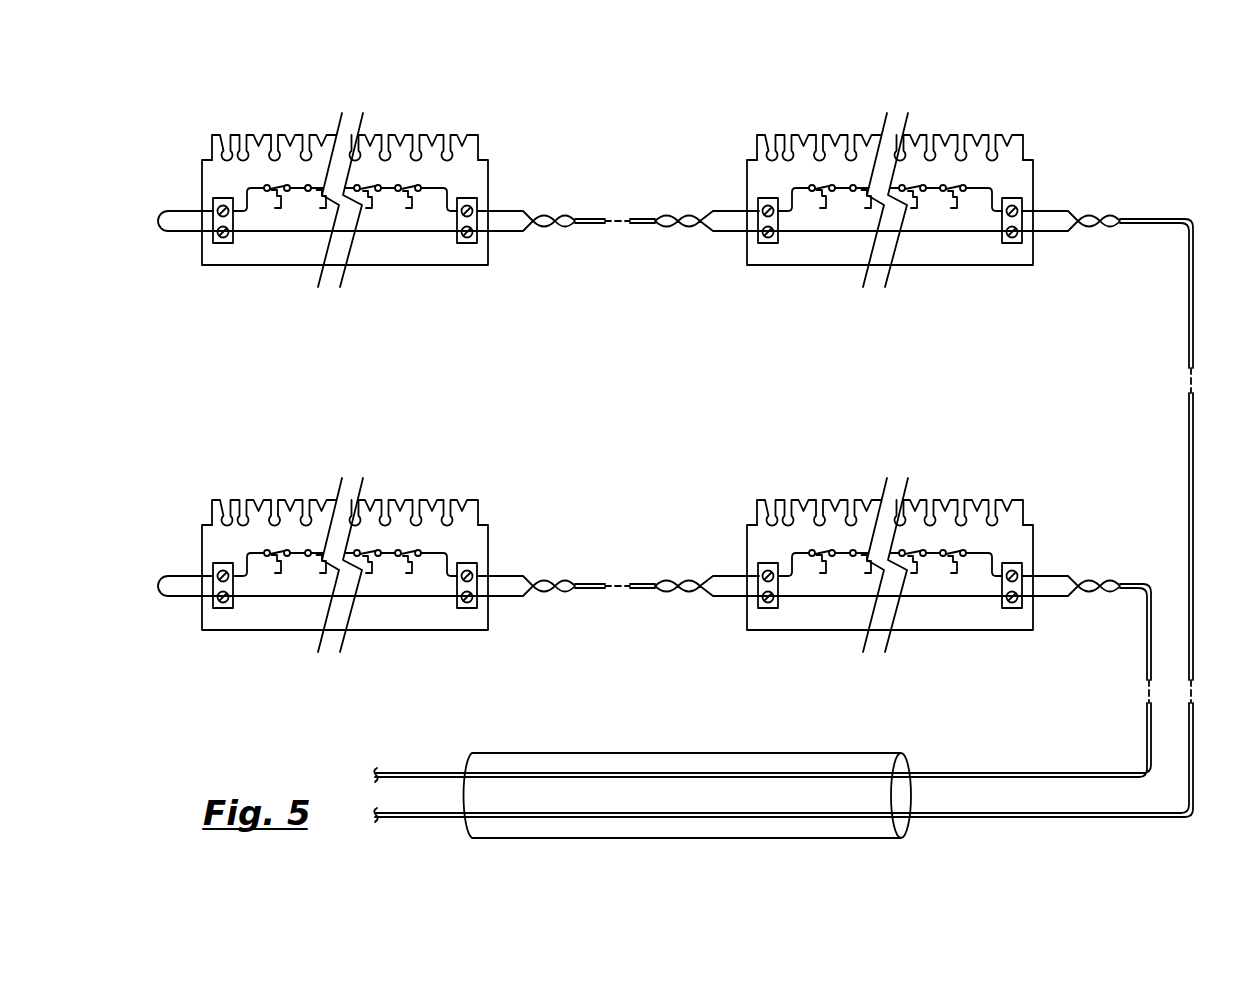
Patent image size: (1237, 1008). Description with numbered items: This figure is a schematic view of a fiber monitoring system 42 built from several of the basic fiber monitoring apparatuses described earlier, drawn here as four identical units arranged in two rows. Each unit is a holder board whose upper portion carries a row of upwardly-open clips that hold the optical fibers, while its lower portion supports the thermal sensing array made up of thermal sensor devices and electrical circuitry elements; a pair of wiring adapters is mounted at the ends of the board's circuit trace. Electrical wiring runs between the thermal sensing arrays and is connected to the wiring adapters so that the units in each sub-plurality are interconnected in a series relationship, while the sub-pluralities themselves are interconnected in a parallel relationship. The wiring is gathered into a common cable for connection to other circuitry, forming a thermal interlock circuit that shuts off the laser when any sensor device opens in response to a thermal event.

The fiber monitoring system 42 is at (1120, 168).